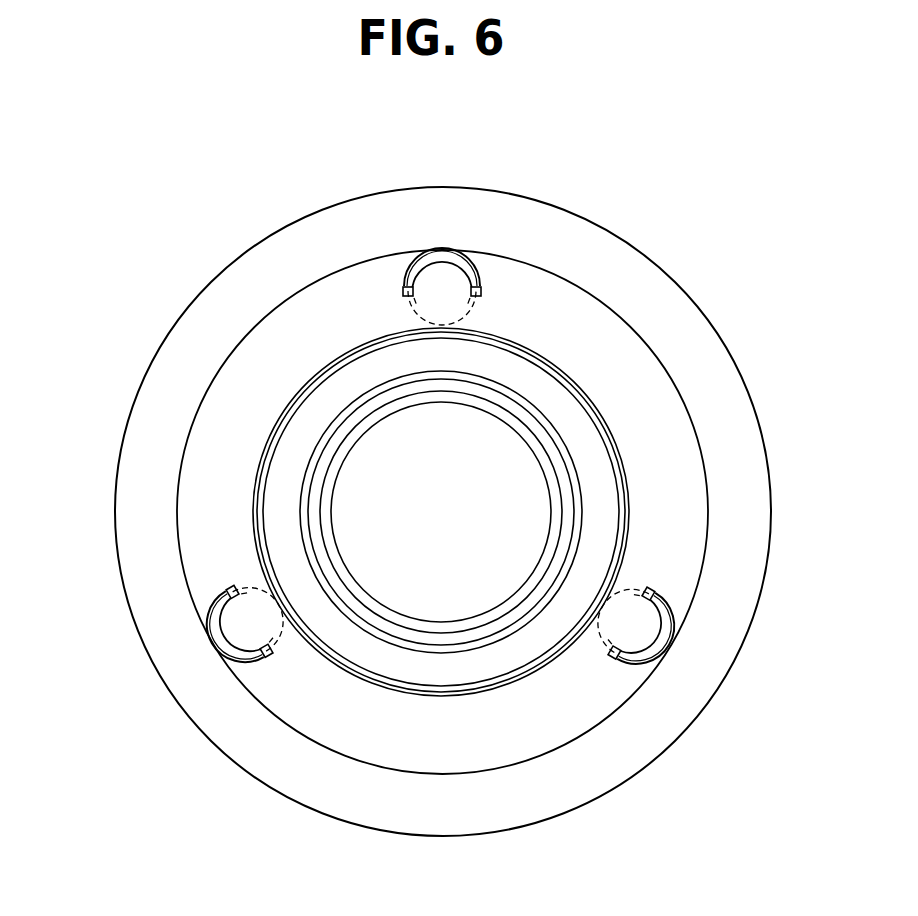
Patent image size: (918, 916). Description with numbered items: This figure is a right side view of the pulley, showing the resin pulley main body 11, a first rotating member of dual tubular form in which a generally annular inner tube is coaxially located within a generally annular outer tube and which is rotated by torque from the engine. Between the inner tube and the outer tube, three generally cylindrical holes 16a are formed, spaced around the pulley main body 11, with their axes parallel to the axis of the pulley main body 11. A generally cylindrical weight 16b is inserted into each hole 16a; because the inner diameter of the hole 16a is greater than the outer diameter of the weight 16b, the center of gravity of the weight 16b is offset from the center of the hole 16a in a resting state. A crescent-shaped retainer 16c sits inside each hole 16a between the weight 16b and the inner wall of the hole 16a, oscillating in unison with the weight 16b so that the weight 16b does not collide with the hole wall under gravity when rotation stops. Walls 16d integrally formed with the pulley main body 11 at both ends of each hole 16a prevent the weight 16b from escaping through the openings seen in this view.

The pulley main body 11 is at (654, 247).
The hole 16a is at (405, 287).
The weight 16b is at (442, 257).
The retainer 16c is at (407, 304).
The wall 16d is at (448, 280).